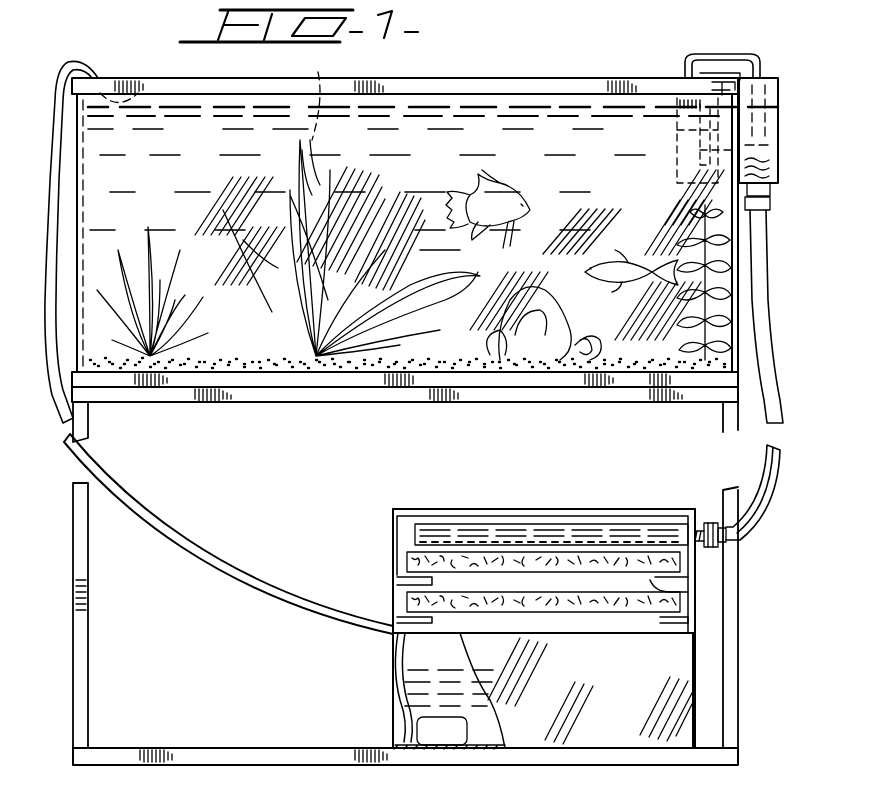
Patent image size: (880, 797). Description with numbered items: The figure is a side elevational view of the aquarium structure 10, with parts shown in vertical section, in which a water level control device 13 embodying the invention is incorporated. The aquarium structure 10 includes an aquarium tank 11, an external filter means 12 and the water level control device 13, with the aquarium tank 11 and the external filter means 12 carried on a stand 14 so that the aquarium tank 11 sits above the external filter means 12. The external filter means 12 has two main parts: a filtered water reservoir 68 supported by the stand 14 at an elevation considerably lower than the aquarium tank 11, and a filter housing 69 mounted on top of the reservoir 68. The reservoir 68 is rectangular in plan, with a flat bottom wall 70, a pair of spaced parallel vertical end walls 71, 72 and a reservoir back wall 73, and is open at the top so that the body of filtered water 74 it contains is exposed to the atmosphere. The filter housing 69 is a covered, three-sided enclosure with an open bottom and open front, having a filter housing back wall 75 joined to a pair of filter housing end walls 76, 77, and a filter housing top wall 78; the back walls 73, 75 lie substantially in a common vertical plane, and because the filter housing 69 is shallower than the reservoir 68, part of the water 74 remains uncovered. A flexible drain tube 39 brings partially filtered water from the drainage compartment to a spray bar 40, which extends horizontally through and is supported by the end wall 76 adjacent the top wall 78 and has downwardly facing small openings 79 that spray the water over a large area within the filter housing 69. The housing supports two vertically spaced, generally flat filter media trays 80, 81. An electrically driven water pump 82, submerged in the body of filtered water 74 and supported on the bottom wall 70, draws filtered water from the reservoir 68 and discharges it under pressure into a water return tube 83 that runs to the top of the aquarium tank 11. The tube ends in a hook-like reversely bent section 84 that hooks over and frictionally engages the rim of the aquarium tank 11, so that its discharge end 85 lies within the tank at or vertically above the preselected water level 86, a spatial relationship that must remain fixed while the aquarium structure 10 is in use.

The aquarium structure 10 is at (460, 76).
The aquarium tank 11 is at (258, 389).
The external filter means 12 is at (535, 615).
The water level control device 13 is at (772, 78).
The stand 14 is at (88, 678).
The drain tube 39 is at (768, 430).
The spray bar 40 is at (580, 535).
The filtered water reservoir 68 is at (394, 713).
The filter housing 69 is at (433, 510).
The bottom wall 70 is at (525, 752).
The end wall 71 is at (697, 657).
The end wall 72 is at (393, 700).
The reservoir back wall 73 is at (425, 652).
The body of filtered water 74 is at (590, 691).
The filter housing back wall 75 is at (410, 582).
The filter housing end wall 76 is at (722, 549).
The filter housing end wall 77 is at (393, 526).
The filter housing top wall 78 is at (475, 524).
The small openings 79 is at (527, 548).
The filter media tray 80 is at (683, 582).
The filter media tray 81 is at (582, 635).
The water pump 82 is at (443, 742).
The water return tube 83 is at (150, 522).
The reversely bent section 84 is at (93, 75).
The discharge end 85 is at (107, 93).
The preselected water level 86 is at (303, 123).